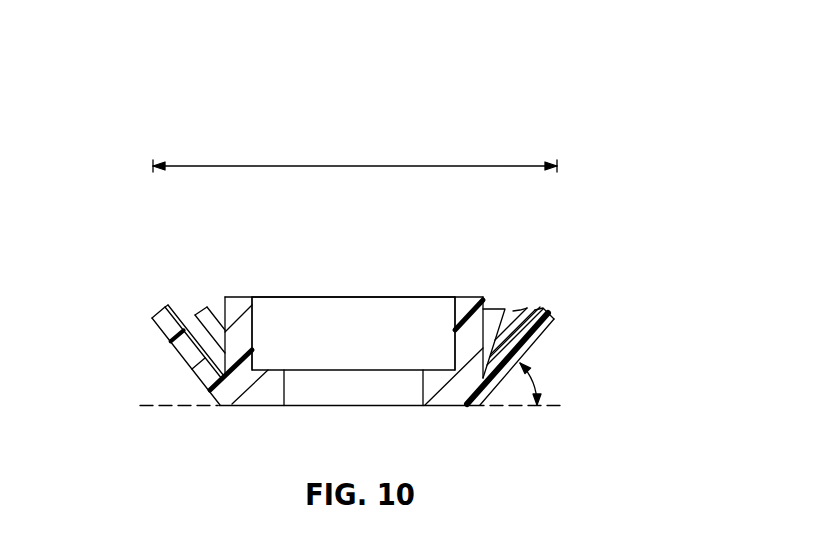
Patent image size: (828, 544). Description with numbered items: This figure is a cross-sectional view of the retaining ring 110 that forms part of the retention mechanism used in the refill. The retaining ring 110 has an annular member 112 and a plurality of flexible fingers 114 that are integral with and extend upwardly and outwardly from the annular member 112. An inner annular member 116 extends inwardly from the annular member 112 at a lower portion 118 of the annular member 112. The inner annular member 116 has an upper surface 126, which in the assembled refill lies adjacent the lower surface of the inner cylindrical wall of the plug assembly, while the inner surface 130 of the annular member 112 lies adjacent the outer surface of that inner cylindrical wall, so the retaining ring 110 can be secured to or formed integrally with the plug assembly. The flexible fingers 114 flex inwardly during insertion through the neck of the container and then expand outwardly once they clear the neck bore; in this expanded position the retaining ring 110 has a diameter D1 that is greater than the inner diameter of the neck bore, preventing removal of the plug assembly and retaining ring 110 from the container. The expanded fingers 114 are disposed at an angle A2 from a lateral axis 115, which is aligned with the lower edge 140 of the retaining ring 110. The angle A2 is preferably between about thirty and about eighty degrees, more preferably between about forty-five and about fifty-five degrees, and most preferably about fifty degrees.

The retaining ring 110 is at (165, 112).
The annular member 112 is at (472, 298).
The flexible fingers 114 is at (181, 306).
The lateral axis 115 is at (560, 405).
The inner annular member 116 is at (437, 407).
The lower portion 118 is at (483, 407).
The upper surface 126 is at (257, 367).
The inner surface 130 is at (452, 314).
The lower edge 140 is at (232, 407).
The angle A2 is at (536, 378).
The diameter D1 is at (355, 165).